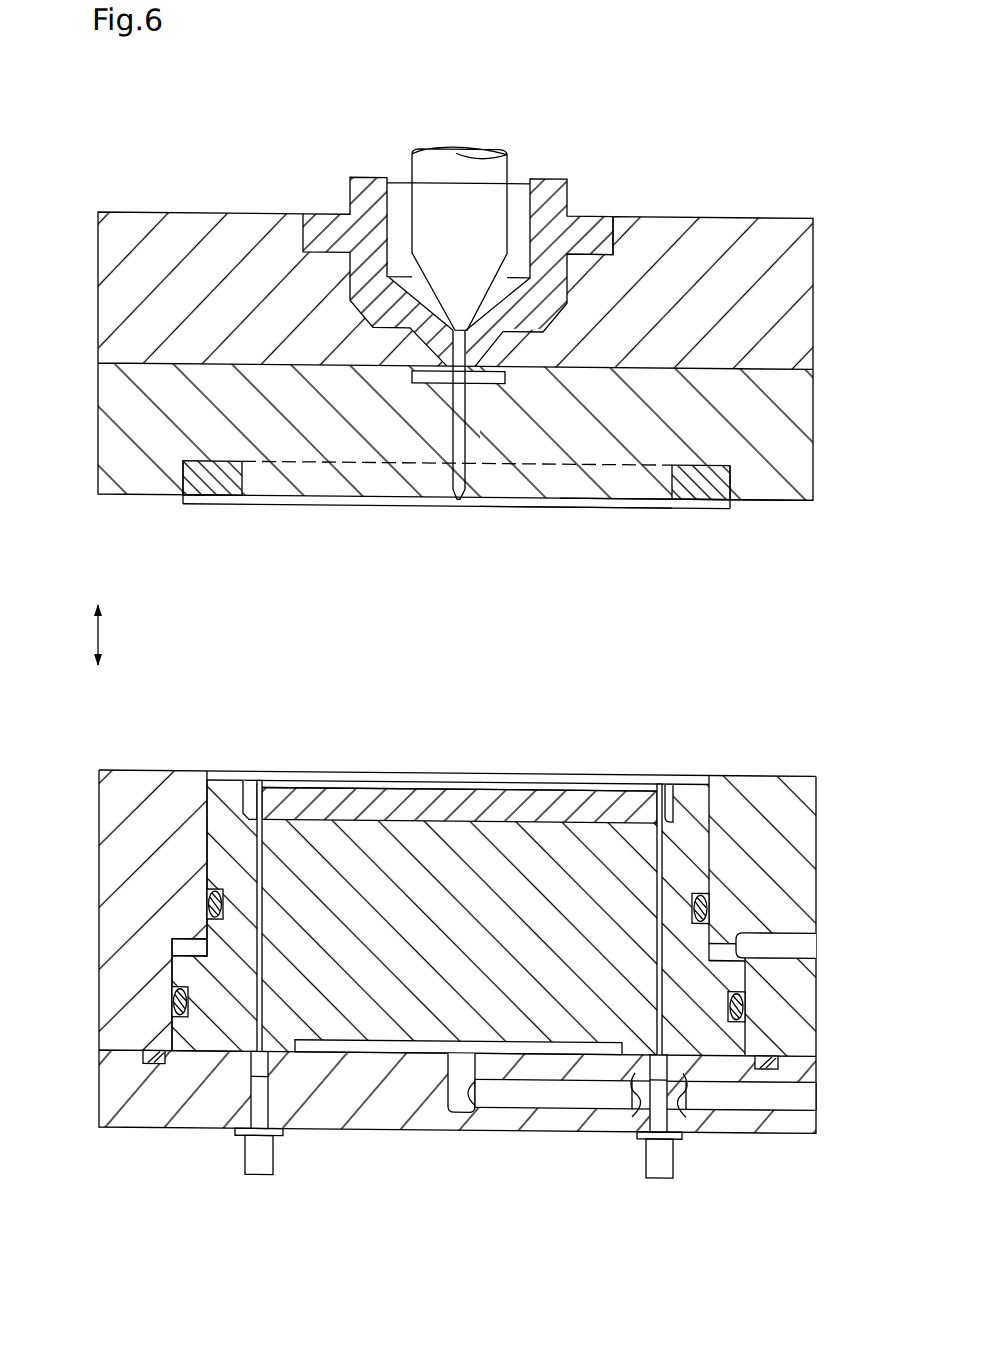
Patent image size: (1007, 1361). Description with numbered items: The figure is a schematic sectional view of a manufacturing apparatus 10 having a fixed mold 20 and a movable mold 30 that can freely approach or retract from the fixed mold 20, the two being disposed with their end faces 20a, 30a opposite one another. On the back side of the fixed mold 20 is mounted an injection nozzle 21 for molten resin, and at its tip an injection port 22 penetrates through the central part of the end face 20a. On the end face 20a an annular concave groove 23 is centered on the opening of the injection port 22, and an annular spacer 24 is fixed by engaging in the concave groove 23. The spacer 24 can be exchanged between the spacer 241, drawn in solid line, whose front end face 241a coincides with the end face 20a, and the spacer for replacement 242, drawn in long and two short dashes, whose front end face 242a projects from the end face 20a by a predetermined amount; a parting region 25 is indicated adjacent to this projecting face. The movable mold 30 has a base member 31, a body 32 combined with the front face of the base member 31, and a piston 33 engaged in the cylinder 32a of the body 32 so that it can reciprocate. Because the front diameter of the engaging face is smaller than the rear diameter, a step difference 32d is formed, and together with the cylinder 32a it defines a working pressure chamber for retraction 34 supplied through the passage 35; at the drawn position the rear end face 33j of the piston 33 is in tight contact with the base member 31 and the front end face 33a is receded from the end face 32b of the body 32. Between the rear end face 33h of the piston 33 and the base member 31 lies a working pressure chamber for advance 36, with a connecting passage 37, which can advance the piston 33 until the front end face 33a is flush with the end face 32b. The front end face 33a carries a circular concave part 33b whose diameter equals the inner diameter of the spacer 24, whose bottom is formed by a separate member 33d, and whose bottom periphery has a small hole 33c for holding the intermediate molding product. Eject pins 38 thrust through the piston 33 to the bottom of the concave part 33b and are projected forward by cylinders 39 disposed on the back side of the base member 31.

The manufacturing apparatus 10 is at (772, 195).
The fixed mold 20 is at (673, 205).
The end face of fixed mold 20a is at (772, 500).
The injection nozzle 21 is at (497, 178).
The injection port 22 is at (490, 497).
The annular concave groove 23 is at (185, 478).
The annular spacer 24 is at (205, 485).
The spacer 241 is at (212, 478).
The front end face of spacer 241a is at (234, 502).
The spacer for replacement 242 is at (313, 505).
The front end face of replacement spacer 242a is at (690, 509).
The parting surface 25 is at (584, 511).
The movable mold 30 is at (823, 738).
The end face of movable mold 30a is at (363, 770).
The base member 31 is at (165, 1115).
The body 32 is at (140, 922).
The cylinder 32a is at (205, 862).
The end face of body 32b is at (745, 773).
The step difference 32d is at (172, 948).
The piston 33 is at (235, 835).
The front end face of piston 33a is at (672, 790).
The circular concave part 33b is at (540, 790).
The small hole 33c is at (250, 787).
The member 33d is at (468, 793).
The rear end face of piston 33h is at (477, 1050).
The rear end face of piston 33j is at (222, 1060).
The working pressure chamber for retraction 34 is at (721, 957).
The passage 35 is at (780, 935).
The working pressure chamber for advance 36 is at (397, 1048).
The passage 37 is at (535, 1095).
The eject pin 38 is at (263, 1077).
The cylinder 39 is at (276, 1163).